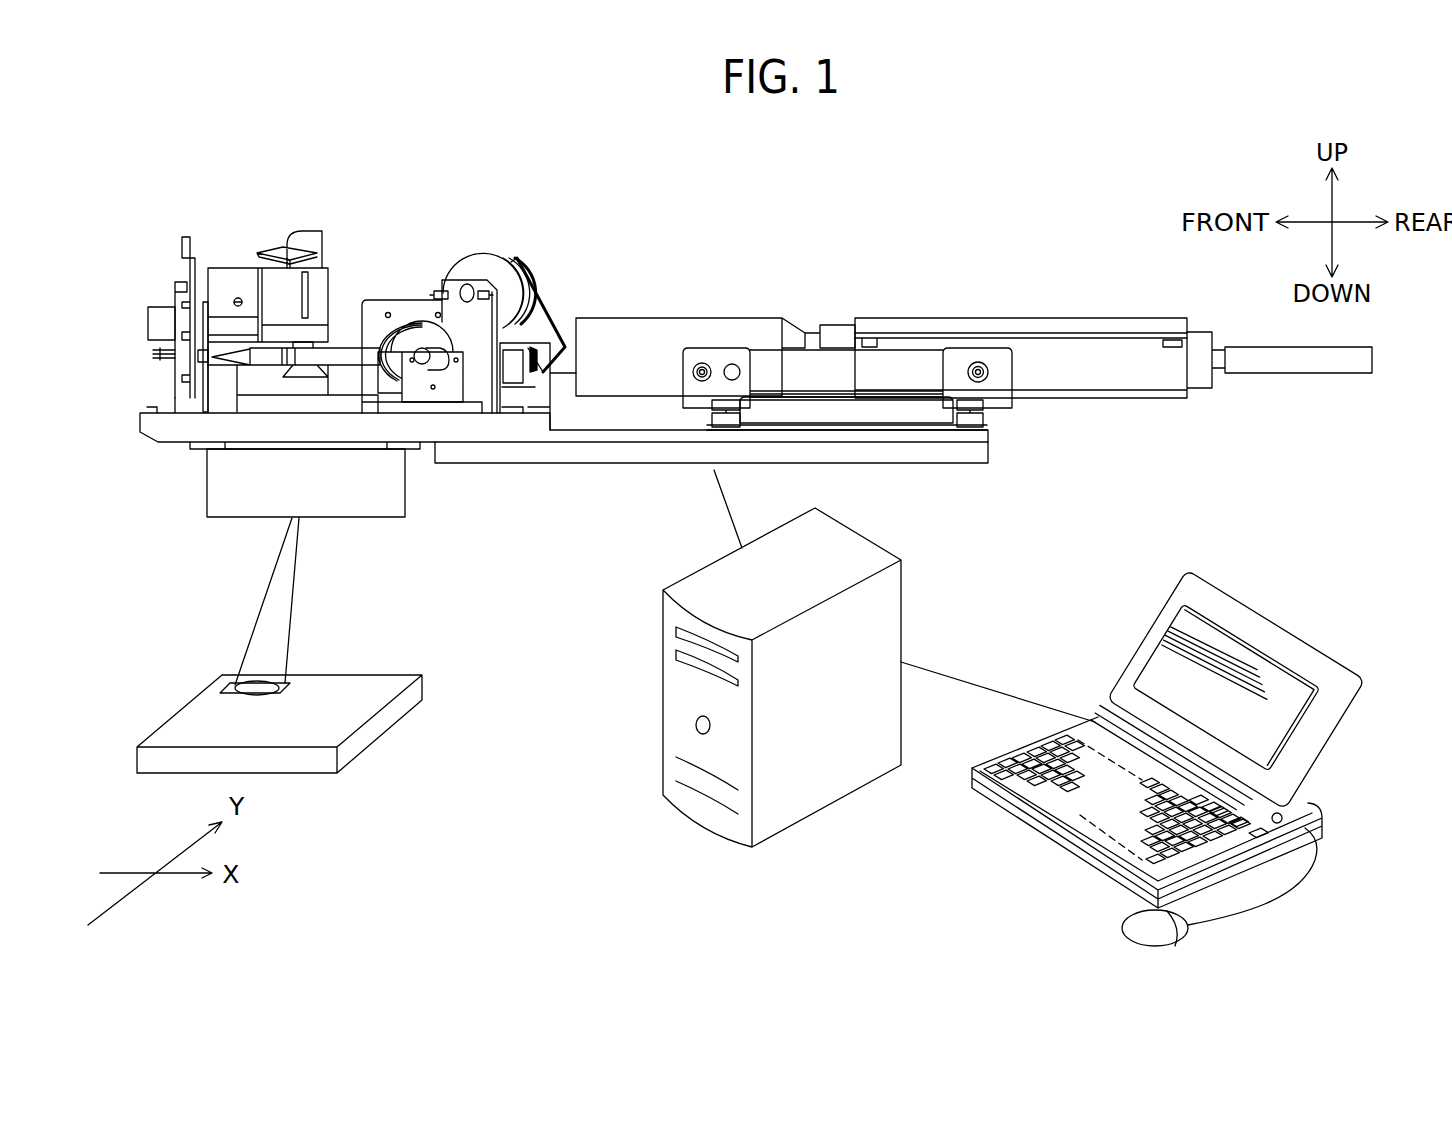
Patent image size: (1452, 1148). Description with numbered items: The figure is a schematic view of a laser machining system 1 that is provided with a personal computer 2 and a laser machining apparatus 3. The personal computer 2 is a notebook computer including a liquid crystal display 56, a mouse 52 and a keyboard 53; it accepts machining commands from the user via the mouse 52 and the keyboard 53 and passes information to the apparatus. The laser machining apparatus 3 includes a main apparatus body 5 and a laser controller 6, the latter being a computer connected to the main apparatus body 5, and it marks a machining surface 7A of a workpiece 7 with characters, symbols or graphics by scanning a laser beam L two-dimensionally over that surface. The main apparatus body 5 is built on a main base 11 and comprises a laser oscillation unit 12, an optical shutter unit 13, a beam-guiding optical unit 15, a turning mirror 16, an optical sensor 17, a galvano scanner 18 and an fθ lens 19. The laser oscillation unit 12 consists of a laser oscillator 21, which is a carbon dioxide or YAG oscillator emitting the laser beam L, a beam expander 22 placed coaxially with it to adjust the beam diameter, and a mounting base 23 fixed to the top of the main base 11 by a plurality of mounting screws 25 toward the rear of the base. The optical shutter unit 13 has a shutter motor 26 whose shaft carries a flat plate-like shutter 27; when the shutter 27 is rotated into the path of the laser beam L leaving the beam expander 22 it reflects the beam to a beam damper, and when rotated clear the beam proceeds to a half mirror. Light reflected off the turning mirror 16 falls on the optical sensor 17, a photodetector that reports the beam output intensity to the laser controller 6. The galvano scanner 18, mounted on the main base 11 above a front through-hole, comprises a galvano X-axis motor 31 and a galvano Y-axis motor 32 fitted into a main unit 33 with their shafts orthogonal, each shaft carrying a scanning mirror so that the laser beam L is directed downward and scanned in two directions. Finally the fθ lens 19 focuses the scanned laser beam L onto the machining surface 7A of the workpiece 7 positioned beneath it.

The laser machining system 1 is at (899, 204).
The personal computer 2 is at (1305, 602).
The laser machining apparatus 3 is at (1025, 262).
The main apparatus body 5 is at (733, 262).
The laser controller 6 is at (905, 617).
The workpiece 7 is at (375, 728).
The machining surface 7A is at (360, 687).
The main base 11 is at (614, 450).
The laser oscillation unit 12 is at (926, 304).
The optical shutter unit 13 is at (462, 297).
The beam-guiding optical unit 15 is at (401, 288).
The turning mirror 16 is at (437, 340).
The optical sensor 17 is at (178, 372).
The galvano scanner 18 is at (243, 256).
The fθ lens 19 is at (232, 497).
The laser oscillator 21 is at (1117, 332).
The beam expander 22 is at (652, 326).
The mounting base 23 is at (905, 415).
The mounting screws 25 is at (727, 432).
The shutter motor 26 is at (510, 263).
The shutter 27 is at (543, 282).
The galvano X-axis motor 31 is at (298, 243).
The galvano Y-axis motor 32 is at (150, 325).
The main unit 33 is at (220, 276).
The mouse 52 is at (1118, 912).
The keyboard 53 is at (1040, 780).
The liquid crystal display 56 is at (1222, 636).
The laser beam L is at (510, 357).